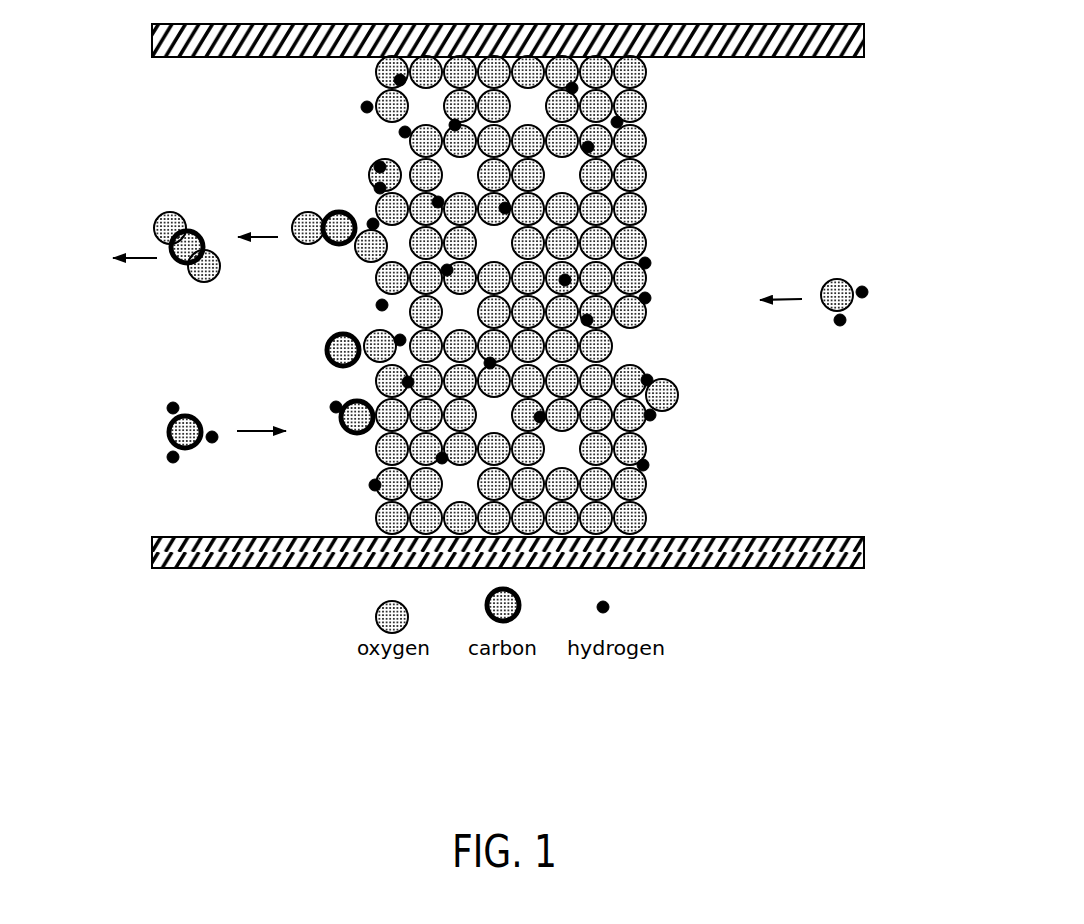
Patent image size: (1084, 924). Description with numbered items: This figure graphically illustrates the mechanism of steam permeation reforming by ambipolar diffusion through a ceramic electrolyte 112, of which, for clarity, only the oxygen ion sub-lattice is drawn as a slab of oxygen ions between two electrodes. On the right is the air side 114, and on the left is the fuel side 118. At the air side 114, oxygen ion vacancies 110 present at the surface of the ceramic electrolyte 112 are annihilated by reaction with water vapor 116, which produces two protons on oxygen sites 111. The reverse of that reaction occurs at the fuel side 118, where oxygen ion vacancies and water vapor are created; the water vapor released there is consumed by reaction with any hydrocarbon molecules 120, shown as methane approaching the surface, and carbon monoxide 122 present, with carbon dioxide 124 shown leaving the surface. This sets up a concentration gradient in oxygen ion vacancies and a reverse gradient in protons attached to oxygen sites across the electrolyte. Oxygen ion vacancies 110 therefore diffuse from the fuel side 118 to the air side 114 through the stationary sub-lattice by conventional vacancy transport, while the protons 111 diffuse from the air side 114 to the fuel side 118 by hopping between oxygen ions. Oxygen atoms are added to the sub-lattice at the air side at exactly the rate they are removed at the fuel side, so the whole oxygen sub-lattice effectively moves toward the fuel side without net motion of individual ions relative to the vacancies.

The oxygen ion vacancies 110 is at (630, 348).
The protons on oxygen sites 111 is at (662, 298).
The ceramic electrolyte 112 is at (610, 175).
The air side 114 is at (792, 93).
The water vapor 116 is at (837, 302).
The fuel side 118 is at (245, 93).
The hydrocarbon molecules 120 is at (308, 407).
The carbon monoxide 122 is at (340, 265).
The carbon dioxide molecule 124 is at (208, 224).